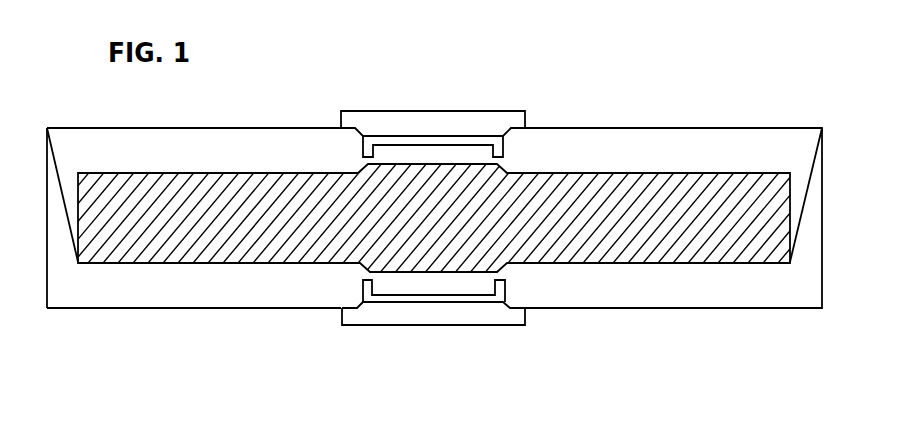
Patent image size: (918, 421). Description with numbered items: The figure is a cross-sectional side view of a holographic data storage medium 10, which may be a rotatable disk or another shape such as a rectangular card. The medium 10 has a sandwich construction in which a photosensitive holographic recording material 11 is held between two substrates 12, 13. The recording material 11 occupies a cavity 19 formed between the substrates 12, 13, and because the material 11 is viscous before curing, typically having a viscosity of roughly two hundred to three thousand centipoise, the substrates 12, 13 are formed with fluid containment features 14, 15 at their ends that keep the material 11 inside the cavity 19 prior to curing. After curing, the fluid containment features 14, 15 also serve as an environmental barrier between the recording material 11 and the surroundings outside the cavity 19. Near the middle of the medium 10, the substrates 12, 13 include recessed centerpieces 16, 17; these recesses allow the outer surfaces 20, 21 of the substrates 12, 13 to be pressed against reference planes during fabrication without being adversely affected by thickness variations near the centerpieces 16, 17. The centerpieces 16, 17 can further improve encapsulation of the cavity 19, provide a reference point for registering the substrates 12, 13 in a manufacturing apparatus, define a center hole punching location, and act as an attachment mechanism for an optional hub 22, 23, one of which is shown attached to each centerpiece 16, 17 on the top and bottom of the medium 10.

The holographic data storage medium 10 is at (578, 106).
The photosensitive holographic recording material 11 is at (537, 200).
The substrate 12 is at (737, 157).
The substrate 13 is at (757, 287).
The fluid containment feature 14 is at (72, 355).
The fluid containment feature 15 is at (55, 253).
The recessed centerpiece 16 is at (480, 157).
The recessed centerpiece 17 is at (388, 280).
The cavity 19 is at (348, 188).
The outer surface 20 is at (183, 122).
The outer surface 21 is at (205, 313).
The hub 22 is at (405, 112).
The hub 23 is at (482, 327).